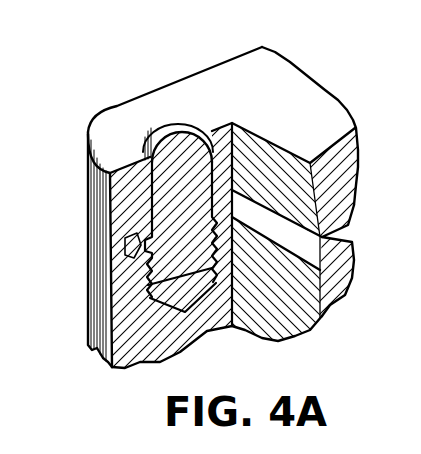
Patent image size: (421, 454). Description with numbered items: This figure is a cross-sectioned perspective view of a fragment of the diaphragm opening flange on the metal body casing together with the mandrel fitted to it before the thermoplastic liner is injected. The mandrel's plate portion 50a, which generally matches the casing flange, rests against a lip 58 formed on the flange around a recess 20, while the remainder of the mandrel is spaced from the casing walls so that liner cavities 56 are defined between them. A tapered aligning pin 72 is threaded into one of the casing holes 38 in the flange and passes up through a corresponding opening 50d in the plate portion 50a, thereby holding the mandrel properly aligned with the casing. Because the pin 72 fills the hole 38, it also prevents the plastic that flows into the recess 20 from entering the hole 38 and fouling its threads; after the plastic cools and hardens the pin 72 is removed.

The plate portion 50a is at (88, 190).
The openings 50d is at (202, 137).
The tapered aligning pins 72 is at (193, 201).
The liner cavities 56 is at (326, 233).
The lip 58 is at (127, 246).
The recess 20 is at (133, 257).
The casing holes 38 is at (162, 282).